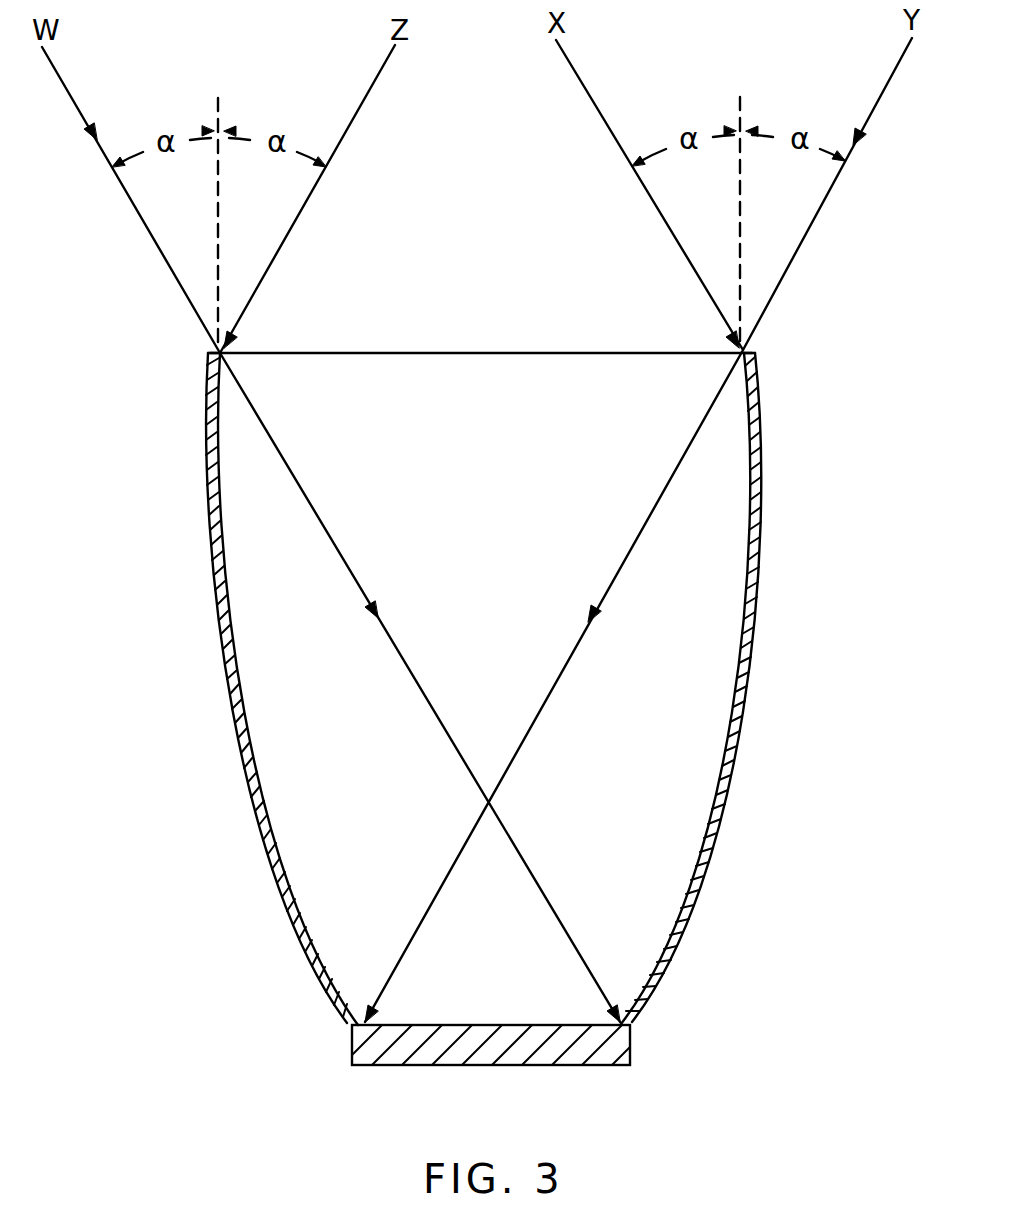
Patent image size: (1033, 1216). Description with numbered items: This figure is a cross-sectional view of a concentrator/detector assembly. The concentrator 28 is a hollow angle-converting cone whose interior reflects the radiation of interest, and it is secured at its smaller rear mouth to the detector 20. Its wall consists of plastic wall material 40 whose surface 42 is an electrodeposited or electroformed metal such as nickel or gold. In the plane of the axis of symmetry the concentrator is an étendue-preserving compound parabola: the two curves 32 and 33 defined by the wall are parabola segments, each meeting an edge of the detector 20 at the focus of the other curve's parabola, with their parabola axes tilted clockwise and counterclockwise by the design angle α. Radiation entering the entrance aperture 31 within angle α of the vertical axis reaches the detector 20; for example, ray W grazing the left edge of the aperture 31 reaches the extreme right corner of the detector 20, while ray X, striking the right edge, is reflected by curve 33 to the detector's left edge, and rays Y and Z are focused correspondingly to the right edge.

The detector 20 is at (632, 1048).
The concentrator 28 is at (790, 812).
The entrance aperture 31 is at (528, 278).
The curve 32 is at (238, 742).
The curve 33 is at (748, 722).
The plastic wall material 40 is at (212, 533).
The surface 42 is at (228, 600).